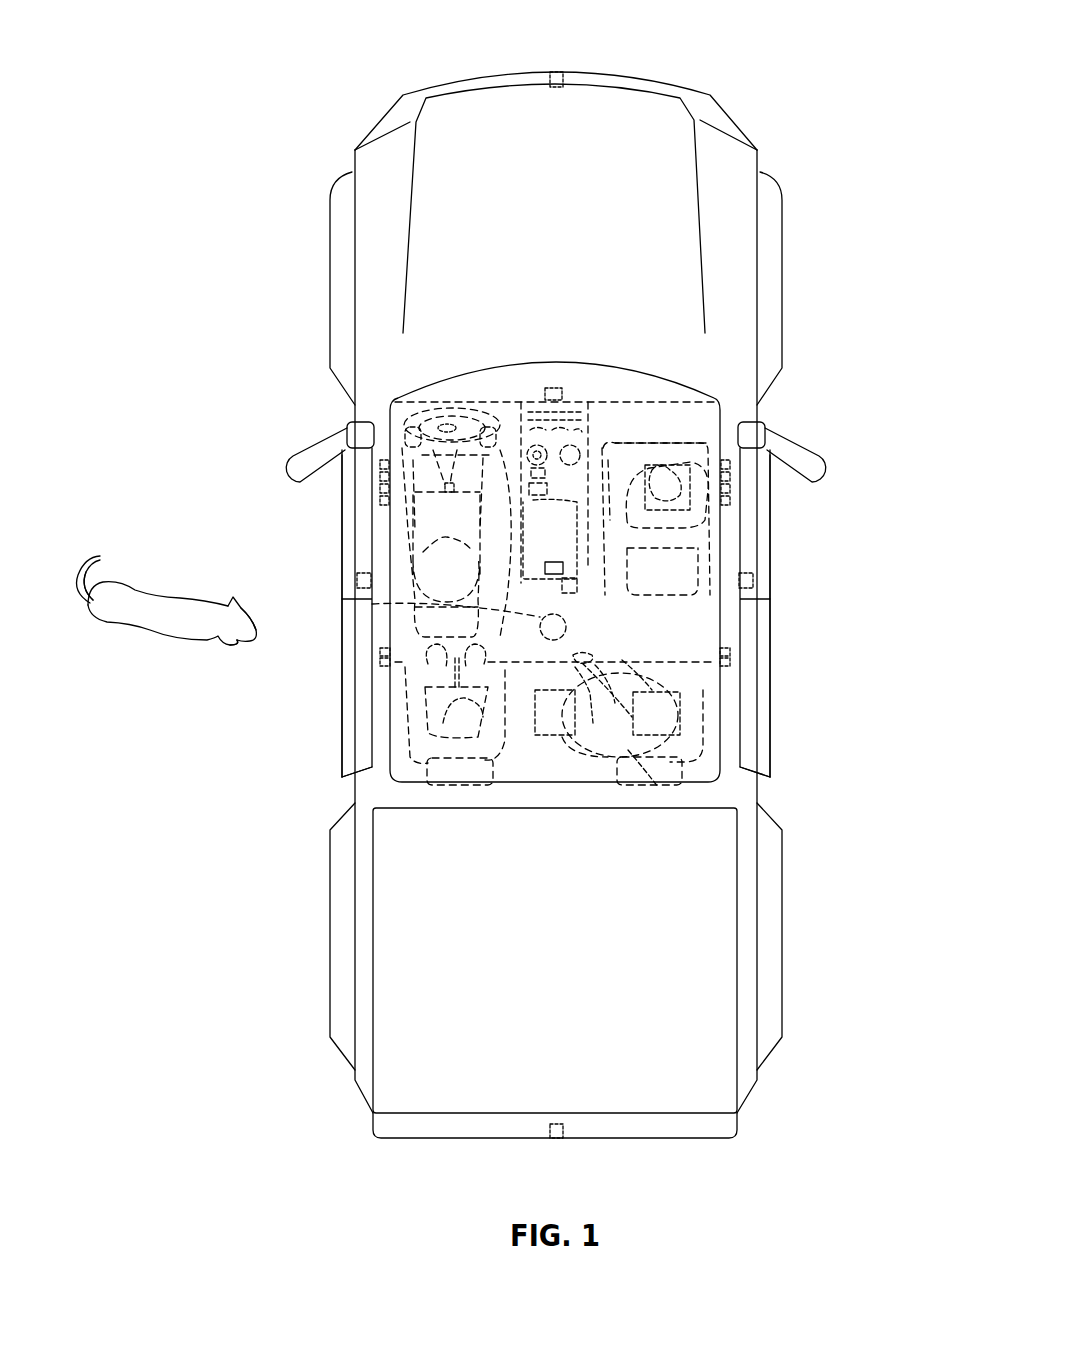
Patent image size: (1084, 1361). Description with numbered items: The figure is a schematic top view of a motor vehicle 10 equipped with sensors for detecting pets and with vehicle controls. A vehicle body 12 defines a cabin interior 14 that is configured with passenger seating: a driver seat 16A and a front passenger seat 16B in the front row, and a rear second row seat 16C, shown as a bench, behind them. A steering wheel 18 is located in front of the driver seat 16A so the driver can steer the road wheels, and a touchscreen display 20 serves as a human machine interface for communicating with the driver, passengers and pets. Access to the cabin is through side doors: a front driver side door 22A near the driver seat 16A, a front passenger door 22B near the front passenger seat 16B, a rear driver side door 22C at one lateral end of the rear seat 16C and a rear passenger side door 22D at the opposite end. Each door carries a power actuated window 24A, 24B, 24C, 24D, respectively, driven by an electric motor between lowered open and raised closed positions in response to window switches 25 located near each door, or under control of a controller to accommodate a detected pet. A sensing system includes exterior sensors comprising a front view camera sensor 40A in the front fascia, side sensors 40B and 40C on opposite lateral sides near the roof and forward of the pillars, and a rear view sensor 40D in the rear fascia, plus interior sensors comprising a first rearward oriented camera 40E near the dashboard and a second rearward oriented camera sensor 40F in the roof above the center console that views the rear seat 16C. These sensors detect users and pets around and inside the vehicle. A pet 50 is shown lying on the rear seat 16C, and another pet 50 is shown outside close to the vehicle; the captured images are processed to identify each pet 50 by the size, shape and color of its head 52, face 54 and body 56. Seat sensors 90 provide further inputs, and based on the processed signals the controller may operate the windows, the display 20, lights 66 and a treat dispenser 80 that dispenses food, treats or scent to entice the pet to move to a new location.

The motor vehicle 10 is at (292, 83).
The vehicle body 12 is at (385, 232).
The cabin interior 14 is at (705, 642).
The driver seat 16A is at (405, 548).
The front passenger seat 16B is at (710, 500).
The rear second row seat 16C is at (405, 715).
The steering wheel 18 is at (410, 405).
The touchscreen display 20 is at (625, 477).
The front driver side door 22A is at (343, 450).
The front passenger door 22B is at (810, 452).
The rear driver side door 22C is at (378, 640).
The rear passenger side door 22D is at (762, 672).
The power actuated window 24A is at (360, 497).
The power actuated window 24B is at (772, 472).
The power actuated window 24C is at (335, 770).
The power actuated window 24D is at (762, 712).
The window switches 25 is at (350, 424).
The exterior front view camera sensor 40A is at (557, 70).
The exterior side sensor 40B is at (355, 580).
The exterior side sensor 40C is at (755, 578).
The rear exterior view sensor 40D is at (550, 1131).
The first rearward oriented interior camera 40E is at (557, 388).
The second rearward oriented interior camera sensor 40F is at (563, 567).
The pet 50 is at (217, 603).
The head 52 is at (228, 642).
The face 54 is at (255, 650).
The body 56 is at (157, 600).
The lights 66 is at (372, 605).
The treat dispenser 80 is at (577, 587).
The seat sensors 90 is at (678, 462).